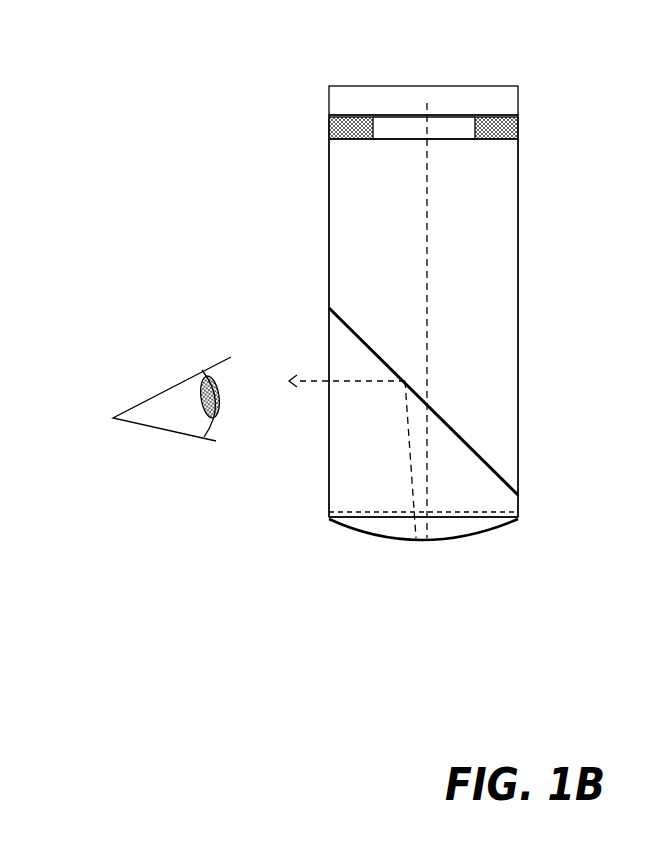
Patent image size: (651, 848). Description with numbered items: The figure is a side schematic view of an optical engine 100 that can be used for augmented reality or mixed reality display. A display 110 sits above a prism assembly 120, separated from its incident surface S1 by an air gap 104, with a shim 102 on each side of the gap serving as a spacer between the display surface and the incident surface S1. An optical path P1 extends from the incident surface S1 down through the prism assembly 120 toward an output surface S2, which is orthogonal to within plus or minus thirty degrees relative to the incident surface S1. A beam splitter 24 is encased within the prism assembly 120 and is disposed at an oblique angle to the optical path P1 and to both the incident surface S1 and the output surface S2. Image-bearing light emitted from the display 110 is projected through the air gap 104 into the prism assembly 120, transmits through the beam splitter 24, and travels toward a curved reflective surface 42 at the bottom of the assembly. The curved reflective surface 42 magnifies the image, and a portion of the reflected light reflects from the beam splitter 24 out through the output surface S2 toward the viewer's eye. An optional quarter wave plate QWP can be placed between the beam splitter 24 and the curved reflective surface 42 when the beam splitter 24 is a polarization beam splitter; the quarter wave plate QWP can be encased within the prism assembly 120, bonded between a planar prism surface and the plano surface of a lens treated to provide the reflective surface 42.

The optical engine 100 is at (48, 124).
The display 110 is at (519, 98).
The shim 102 is at (336, 130).
The air gap 104 is at (448, 128).
The incident surface S1 is at (390, 143).
The optical path P1 is at (427, 265).
The prism assembly 120 is at (518, 332).
The output surface S2 is at (329, 355).
The beam splitter 24 is at (473, 450).
The quarter wave plate QWP is at (329, 514).
The curved reflective surface 42 is at (462, 537).